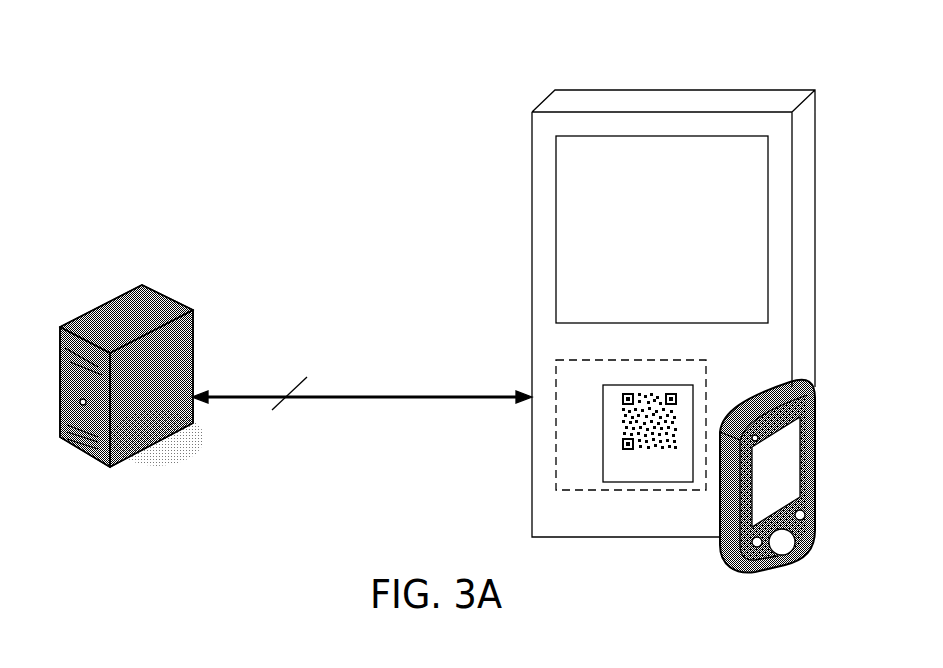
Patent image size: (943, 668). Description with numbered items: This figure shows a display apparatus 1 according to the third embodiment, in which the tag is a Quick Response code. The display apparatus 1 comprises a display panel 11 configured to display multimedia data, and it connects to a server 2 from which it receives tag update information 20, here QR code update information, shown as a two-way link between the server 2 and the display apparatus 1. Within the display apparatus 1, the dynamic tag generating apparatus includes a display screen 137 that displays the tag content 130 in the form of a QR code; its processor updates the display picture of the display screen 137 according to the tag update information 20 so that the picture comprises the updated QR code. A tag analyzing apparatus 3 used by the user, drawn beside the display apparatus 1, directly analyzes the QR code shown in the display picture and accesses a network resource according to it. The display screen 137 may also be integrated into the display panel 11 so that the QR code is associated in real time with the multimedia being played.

The display apparatus 1 is at (697, 90).
The server 2 is at (130, 290).
The tag analyzing apparatus 3 is at (786, 490).
The display panel 11 is at (755, 320).
The tag update information 20 is at (290, 393).
The tag content 130 is at (677, 395).
The display screen 137 is at (667, 476).